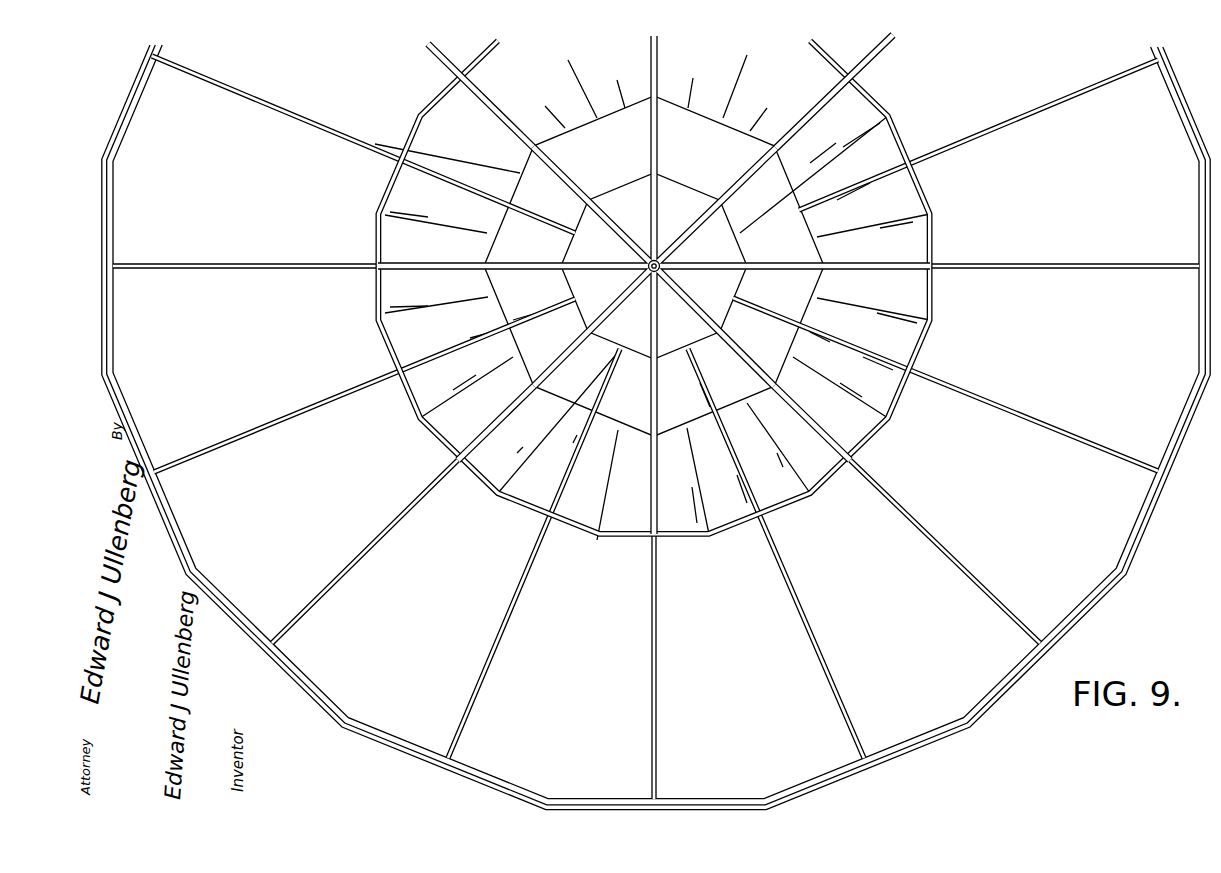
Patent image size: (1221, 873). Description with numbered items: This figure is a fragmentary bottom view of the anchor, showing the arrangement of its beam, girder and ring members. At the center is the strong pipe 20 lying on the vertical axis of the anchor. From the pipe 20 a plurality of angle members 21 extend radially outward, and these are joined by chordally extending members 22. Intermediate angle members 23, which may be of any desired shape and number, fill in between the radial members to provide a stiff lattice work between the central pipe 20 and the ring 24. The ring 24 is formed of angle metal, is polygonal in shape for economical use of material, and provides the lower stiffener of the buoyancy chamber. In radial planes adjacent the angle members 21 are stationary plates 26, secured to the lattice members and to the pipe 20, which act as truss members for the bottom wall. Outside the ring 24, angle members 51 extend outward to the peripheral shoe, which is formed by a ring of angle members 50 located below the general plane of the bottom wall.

The pipe 20 is at (657, 259).
The angle members 21 is at (646, 146).
The chordally extending members 22 is at (620, 416).
The intermediate angle members 23 is at (826, 154).
The ring 24 is at (381, 194).
The stationary plates 26 is at (477, 437).
The ring of angle members 50 is at (1196, 343).
The angle members 51 is at (998, 131).